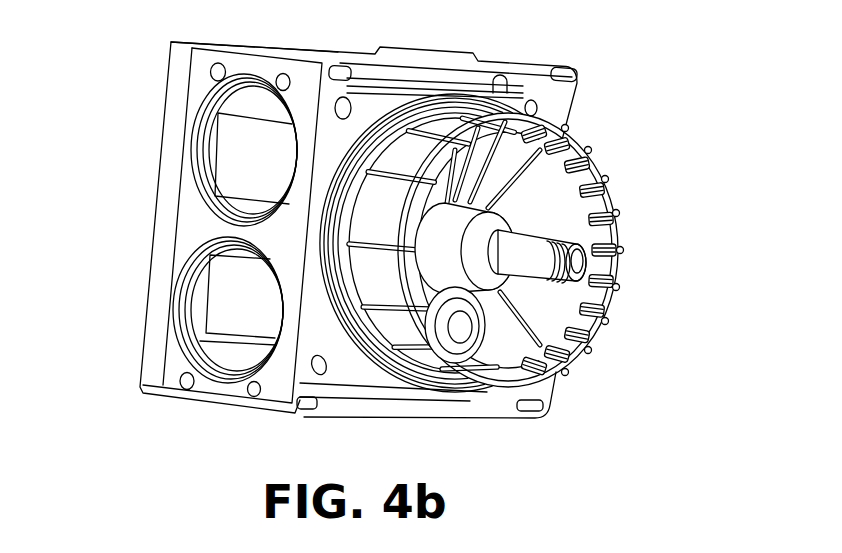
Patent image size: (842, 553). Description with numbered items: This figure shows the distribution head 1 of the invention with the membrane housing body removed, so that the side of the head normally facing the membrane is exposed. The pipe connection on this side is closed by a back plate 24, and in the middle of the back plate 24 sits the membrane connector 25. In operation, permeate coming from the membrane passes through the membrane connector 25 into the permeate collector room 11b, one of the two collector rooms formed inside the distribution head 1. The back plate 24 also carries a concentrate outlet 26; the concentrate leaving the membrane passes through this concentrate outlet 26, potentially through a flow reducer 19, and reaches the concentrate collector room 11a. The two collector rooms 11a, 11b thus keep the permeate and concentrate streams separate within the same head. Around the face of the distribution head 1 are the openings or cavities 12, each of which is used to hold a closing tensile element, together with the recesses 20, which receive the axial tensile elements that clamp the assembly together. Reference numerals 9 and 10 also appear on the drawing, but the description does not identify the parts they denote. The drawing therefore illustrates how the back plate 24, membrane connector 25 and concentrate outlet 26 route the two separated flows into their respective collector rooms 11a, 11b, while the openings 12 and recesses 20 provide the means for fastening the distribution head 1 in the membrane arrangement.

The distribution head 1 is at (460, 50).
The lower suction opening 9 is at (202, 320).
The upper suction opening / front plate 10 is at (217, 160).
The concentrate collector room 11a is at (255, 306).
The permeate collector room 11b is at (273, 177).
The openings 12 is at (284, 73).
The flow reducer 19 is at (575, 348).
The recesses 20 is at (536, 110).
The back plate 24 is at (507, 182).
The membrane connector 25 is at (576, 262).
The concentrate outlet 26 is at (450, 335).